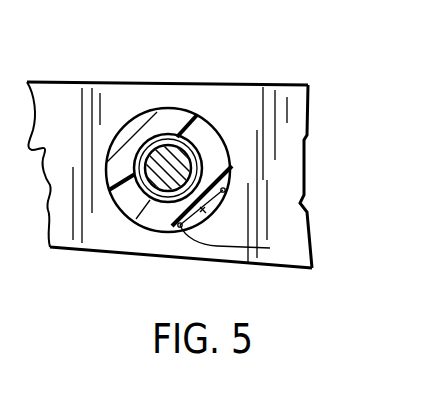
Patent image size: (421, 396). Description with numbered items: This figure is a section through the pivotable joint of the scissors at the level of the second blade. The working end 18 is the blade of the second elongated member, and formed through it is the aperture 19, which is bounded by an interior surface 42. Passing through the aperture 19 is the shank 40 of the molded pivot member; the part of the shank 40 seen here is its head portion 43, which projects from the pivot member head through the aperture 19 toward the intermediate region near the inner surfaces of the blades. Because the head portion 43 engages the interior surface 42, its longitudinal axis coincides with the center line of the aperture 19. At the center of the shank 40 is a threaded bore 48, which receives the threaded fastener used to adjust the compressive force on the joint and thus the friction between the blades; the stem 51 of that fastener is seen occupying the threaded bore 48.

The working end 18 is at (275, 168).
The aperture 19 is at (312, 261).
The shank 40 is at (202, 210).
The interior surface 42 is at (226, 190).
The head portion 43 is at (167, 120).
The threaded bore 48 is at (192, 146).
The stem 51 is at (185, 164).